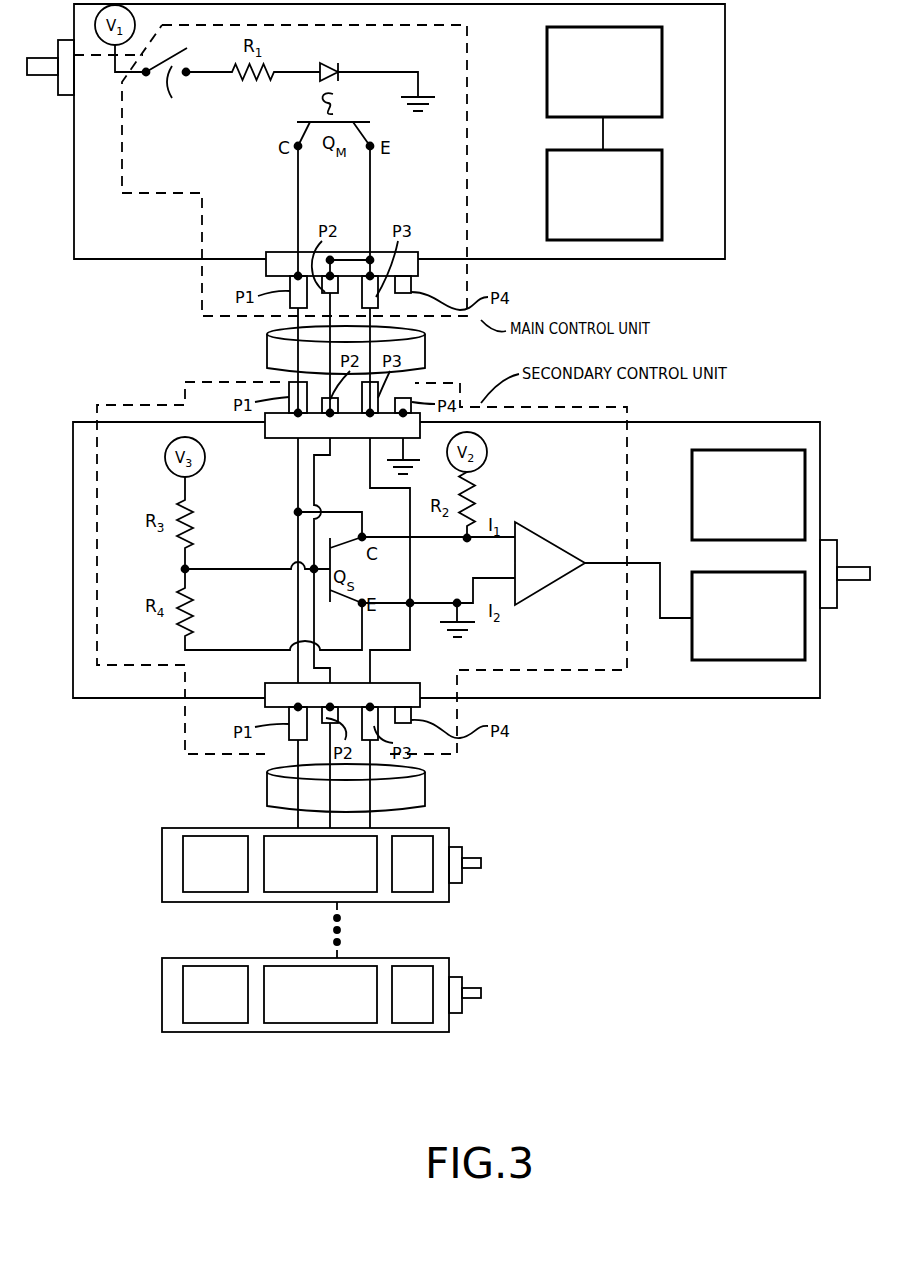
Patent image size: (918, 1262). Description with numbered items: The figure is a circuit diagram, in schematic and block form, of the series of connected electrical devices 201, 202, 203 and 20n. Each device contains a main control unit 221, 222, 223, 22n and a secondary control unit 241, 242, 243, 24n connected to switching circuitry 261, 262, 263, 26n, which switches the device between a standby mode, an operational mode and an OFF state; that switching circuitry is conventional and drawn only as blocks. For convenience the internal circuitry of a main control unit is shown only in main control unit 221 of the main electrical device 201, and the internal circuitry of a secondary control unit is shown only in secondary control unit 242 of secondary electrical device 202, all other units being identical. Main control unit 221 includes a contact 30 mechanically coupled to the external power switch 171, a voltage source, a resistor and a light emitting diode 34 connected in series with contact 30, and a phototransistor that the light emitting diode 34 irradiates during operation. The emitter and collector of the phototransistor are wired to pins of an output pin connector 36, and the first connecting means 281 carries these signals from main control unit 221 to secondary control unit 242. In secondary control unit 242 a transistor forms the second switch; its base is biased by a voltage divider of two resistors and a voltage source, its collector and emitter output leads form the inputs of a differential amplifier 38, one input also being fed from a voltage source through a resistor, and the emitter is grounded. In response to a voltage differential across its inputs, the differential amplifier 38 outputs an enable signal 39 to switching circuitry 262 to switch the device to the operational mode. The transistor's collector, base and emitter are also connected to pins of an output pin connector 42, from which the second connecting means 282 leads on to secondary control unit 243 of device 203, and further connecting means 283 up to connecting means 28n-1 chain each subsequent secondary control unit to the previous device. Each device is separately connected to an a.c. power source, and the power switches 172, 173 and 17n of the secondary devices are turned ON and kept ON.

The external power switch 171 is at (50, 91).
The power switch 172 is at (845, 598).
The power switch 173 is at (491, 857).
The power switch 17n is at (493, 998).
The electrical device 201 is at (436, 131).
The electrical device 202 is at (473, 560).
The electrical device 203 is at (340, 877).
The electrical device 20n is at (334, 1005).
The main control unit 221 is at (322, 170).
The main control unit 222 is at (748, 461).
The main control unit 223 is at (215, 864).
The main control unit 22n is at (215, 994).
The secondary control unit 241 is at (627, 72).
The secondary control unit 242 is at (362, 594).
The secondary control unit 243 is at (320, 864).
The secondary control unit 24n is at (320, 994).
The switching circuitry 261 is at (627, 195).
The switching circuitry 262 is at (748, 662).
The switching circuitry 263 is at (412, 864).
The switching circuitry 26n is at (412, 994).
The first connecting means 281 is at (378, 353).
The second connecting means 282 is at (376, 788).
The connecting means 283 is at (366, 923).
The connecting means 28n-1 is at (406, 948).
The contact 30 is at (166, 86).
The light emitting diode 34 is at (335, 59).
The output pin connector 36 is at (412, 253).
The differential amplifier 38 is at (532, 528).
The enable signal 39 is at (660, 597).
The output pin connector 42 is at (414, 684).